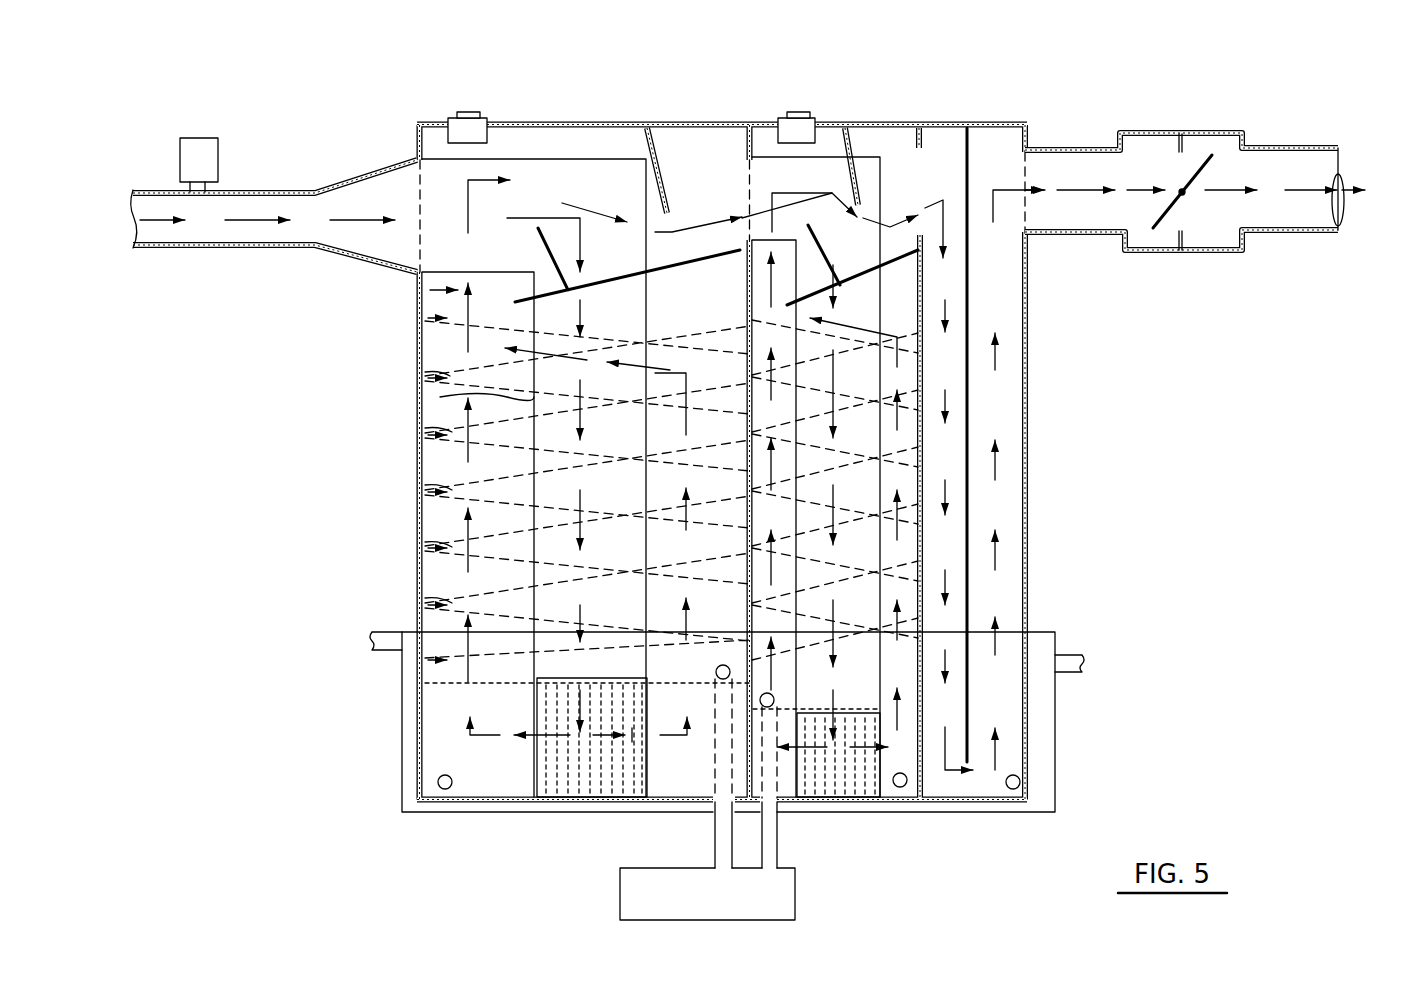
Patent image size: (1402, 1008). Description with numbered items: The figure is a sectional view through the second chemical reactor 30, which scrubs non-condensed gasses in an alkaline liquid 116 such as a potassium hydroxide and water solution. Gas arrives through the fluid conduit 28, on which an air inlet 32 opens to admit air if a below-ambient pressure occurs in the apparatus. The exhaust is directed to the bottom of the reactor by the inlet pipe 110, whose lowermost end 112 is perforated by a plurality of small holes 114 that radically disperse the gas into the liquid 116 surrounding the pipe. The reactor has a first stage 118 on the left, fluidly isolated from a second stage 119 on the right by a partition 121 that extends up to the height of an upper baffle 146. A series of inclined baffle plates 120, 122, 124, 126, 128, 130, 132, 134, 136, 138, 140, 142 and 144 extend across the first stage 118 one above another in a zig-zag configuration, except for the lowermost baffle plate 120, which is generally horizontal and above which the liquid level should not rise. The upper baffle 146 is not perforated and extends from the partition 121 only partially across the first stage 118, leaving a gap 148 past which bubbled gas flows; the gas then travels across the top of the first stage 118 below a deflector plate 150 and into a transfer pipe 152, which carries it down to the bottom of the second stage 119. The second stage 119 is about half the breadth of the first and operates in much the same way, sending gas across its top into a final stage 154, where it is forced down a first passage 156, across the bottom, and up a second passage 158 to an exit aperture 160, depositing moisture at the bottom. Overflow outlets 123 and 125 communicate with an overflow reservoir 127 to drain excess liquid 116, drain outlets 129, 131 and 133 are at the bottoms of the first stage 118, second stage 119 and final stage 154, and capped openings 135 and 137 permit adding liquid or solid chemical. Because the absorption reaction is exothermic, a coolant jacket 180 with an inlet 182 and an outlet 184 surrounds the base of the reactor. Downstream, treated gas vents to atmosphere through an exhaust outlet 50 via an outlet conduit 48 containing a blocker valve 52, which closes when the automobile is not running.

The fluid conduit 28 is at (198, 247).
The second chemical reactor 30 is at (268, 585).
The air inlet 32 is at (200, 146).
The outlet conduit 48 is at (1285, 232).
The exhaust outlet 50 is at (1343, 207).
The blocker valve 52 is at (1215, 250).
The inlet pipe 110 is at (440, 397).
The lowermost end 112 is at (636, 758).
The small holes 114 is at (558, 775).
The liquid 116 is at (485, 782).
The first stage 118 is at (505, 135).
The second stage 119 is at (892, 135).
The baffle plate 120 is at (440, 683).
The partition 121 is at (747, 297).
The baffle plate 122 is at (445, 660).
The overflow outlet 123 is at (718, 682).
The baffle plate 124 is at (460, 606).
The overflow outlet 125 is at (776, 710).
The baffle plate 126 is at (460, 603).
The overflow reservoir 127 is at (630, 895).
The baffle plate 128 is at (460, 549).
The drain outlet 129 is at (436, 787).
The baffle plate 130 is at (460, 547).
The drain outlet 131 is at (900, 789).
The baffle plate 132 is at (460, 492).
The drain outlet 133 is at (1013, 791).
The baffle plate 134 is at (460, 490).
The capped opening 135 is at (455, 112).
The baffle plate 136 is at (460, 437).
The capped opening 137 is at (805, 108).
The baffle plate 138 is at (460, 432).
The baffle plate 140 is at (445, 378).
The baffle plate 142 is at (462, 373).
The baffle plate 144 is at (443, 325).
The upper baffle 146 is at (703, 262).
The gap 148 is at (417, 287).
The deflector plate 150 is at (648, 150).
The transfer pipe 152 is at (767, 150).
The final stage 154 is at (930, 122).
The first passage 156 is at (950, 140).
The second passage 158 is at (1015, 297).
The exit aperture 160 is at (1032, 206).
The coolant jacket 180 is at (1053, 756).
The inlet 182 is at (366, 643).
The outlet 184 is at (1063, 657).